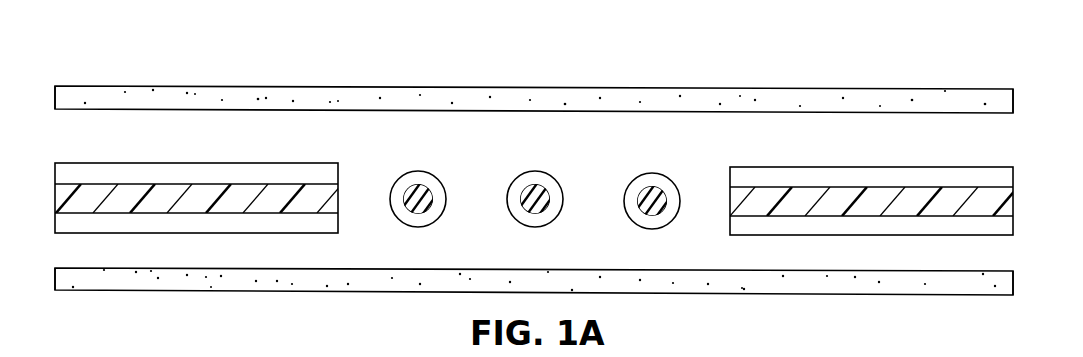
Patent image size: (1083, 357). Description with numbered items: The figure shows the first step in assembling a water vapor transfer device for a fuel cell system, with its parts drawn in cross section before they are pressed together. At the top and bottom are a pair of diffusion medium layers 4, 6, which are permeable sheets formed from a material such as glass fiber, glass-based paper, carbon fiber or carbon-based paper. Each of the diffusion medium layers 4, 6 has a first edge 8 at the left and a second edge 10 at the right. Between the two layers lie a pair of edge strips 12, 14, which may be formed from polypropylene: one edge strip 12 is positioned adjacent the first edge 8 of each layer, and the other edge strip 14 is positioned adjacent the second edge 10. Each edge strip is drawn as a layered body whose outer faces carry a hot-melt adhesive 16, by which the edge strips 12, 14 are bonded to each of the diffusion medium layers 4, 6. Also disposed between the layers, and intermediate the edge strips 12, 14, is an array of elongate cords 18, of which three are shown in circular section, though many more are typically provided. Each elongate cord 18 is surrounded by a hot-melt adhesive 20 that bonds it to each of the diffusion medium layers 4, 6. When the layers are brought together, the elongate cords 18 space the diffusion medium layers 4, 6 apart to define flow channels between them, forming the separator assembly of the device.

The diffusion medium layer 4 is at (845, 82).
The diffusion medium layer 6 is at (710, 306).
The first edge 8 is at (55, 98).
The second edge 10 is at (1013, 99).
The edge strip 12 is at (196, 184).
The edge strip 14 is at (871, 187).
The hot-melt adhesive 16 is at (535, 181).
The elongate cord 18 is at (536, 193).
The hot-melt adhesive 20 is at (519, 206).